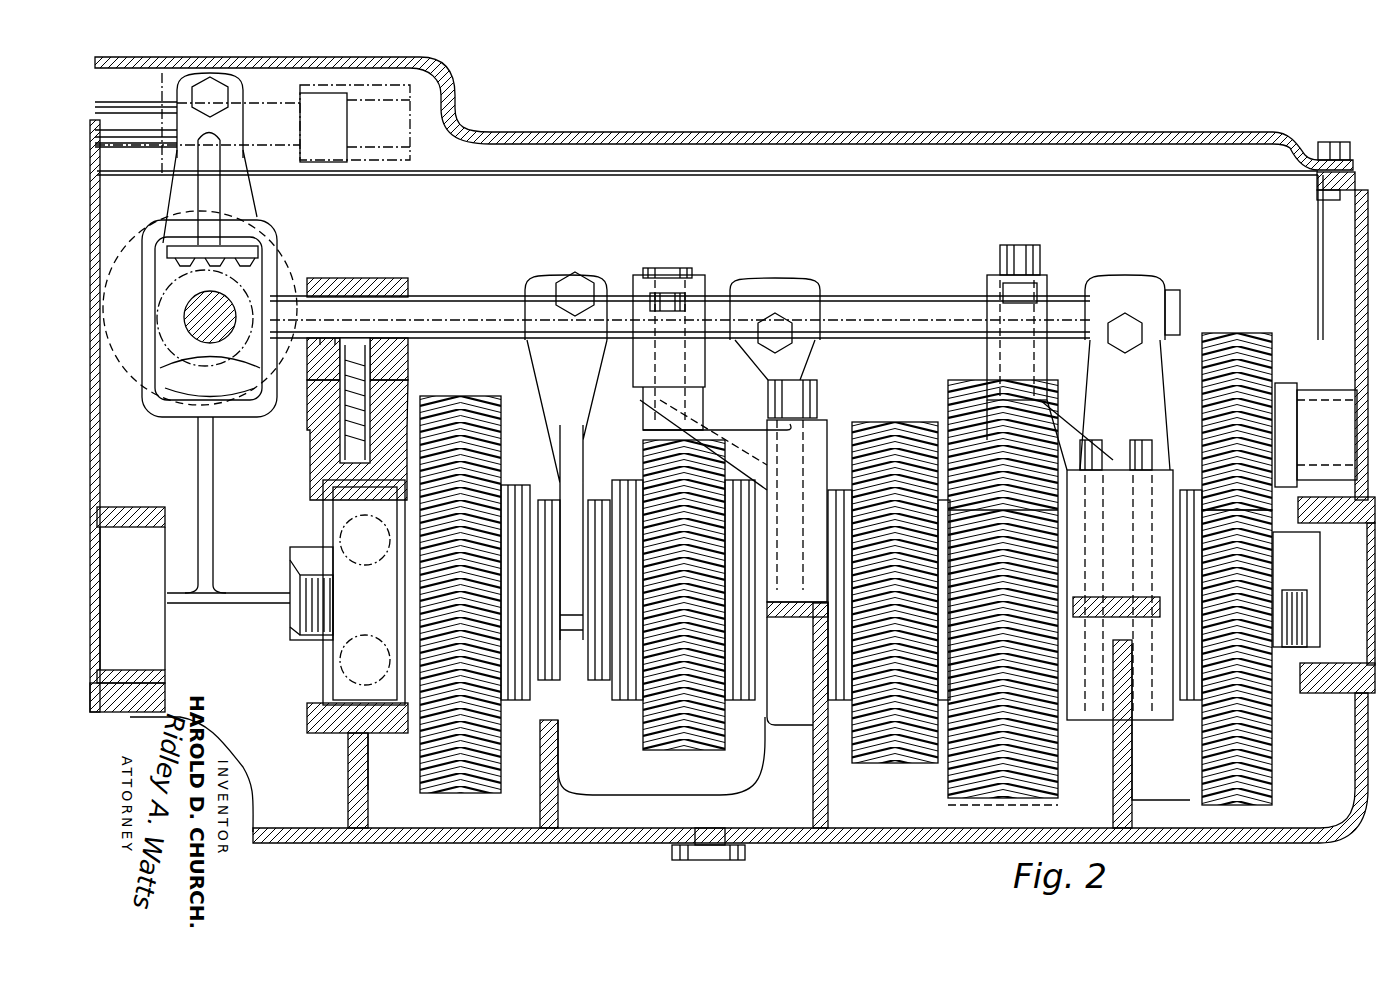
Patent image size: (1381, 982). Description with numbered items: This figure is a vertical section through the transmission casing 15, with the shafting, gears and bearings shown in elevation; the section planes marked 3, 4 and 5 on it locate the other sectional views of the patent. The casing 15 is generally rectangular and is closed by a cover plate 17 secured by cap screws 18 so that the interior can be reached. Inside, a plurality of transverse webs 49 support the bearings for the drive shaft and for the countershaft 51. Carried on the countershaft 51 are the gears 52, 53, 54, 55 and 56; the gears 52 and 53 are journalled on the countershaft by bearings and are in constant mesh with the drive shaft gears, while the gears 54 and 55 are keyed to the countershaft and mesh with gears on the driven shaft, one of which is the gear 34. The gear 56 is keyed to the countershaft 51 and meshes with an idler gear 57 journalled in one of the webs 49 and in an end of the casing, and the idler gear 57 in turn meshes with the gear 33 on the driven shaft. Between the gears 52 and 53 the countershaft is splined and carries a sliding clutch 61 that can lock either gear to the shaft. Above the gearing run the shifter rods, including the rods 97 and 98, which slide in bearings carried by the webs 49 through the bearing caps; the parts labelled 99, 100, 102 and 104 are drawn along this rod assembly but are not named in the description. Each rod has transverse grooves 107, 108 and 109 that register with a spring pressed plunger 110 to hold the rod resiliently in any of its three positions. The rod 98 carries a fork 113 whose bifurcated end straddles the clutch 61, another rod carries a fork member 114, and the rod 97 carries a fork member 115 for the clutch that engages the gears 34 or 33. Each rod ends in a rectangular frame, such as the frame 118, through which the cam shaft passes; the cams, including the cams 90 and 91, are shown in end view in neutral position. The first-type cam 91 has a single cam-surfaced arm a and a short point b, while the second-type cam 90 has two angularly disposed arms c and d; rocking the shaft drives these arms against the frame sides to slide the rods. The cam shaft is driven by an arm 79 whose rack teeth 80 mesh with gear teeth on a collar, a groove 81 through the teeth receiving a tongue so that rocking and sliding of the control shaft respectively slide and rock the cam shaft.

The casing 15 is at (1355, 328).
The cover plate 17 is at (1305, 125).
The cap screws 18 is at (1328, 142).
The gear on driven shaft 33 is at (1272, 720).
The gear on driven shaft 34 is at (958, 380).
The transverse webs 49 is at (370, 800).
The countershaft 51 is at (290, 625).
The gear 52 is at (420, 770).
The gear 53 is at (643, 745).
The gear 54 is at (893, 422).
The gear 55 is at (1058, 660).
The gear 56 is at (1200, 680).
The idler gear 57 is at (1265, 333).
The clutch 61 is at (596, 688).
The arm 79 is at (255, 200).
The rack teeth 80 is at (200, 255).
The groove 81 is at (240, 262).
The cam 90 is at (210, 344).
The cam 91 is at (230, 290).
The shifter rod 97 is at (1065, 296).
The shifter rod 98 is at (415, 296).
The rod support 99 is at (408, 278).
The shifter bracket 100 is at (705, 280).
The shifter bracket 102 is at (1047, 290).
The rod end 104 is at (1175, 300).
The transverse groove 107 is at (325, 335).
The transverse groove 108 is at (360, 335).
The transverse groove 109 is at (395, 335).
The spring pressed plunger 110 is at (375, 365).
The fork 113 is at (583, 440).
The fork member 114 is at (810, 288).
The fork member 115 is at (1160, 285).
The frame 118 is at (240, 405).
The section line 3- 3 is at (357, 205).
The section line 4- 4 is at (118, 55).
The section line 5- 5 is at (835, 225).
The arm a is at (228, 272).
The point b is at (218, 288).
The arm c is at (237, 379).
The arm d is at (176, 379).